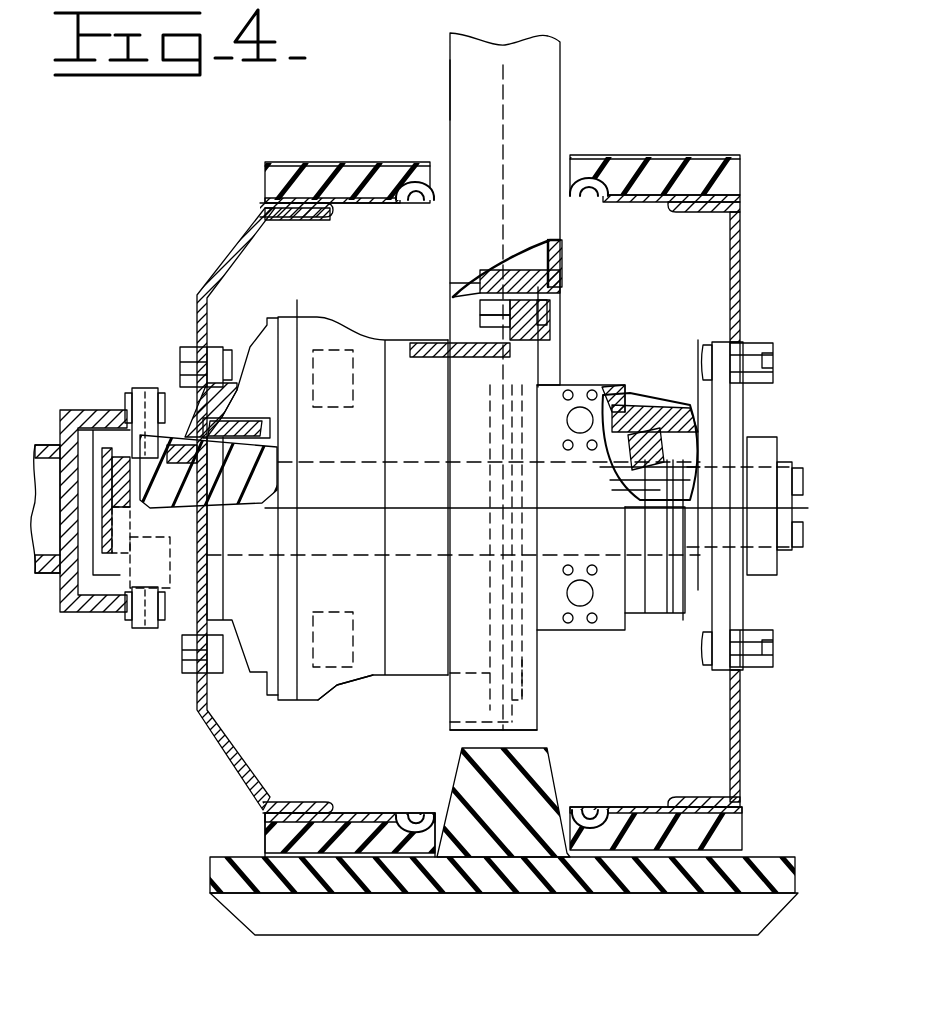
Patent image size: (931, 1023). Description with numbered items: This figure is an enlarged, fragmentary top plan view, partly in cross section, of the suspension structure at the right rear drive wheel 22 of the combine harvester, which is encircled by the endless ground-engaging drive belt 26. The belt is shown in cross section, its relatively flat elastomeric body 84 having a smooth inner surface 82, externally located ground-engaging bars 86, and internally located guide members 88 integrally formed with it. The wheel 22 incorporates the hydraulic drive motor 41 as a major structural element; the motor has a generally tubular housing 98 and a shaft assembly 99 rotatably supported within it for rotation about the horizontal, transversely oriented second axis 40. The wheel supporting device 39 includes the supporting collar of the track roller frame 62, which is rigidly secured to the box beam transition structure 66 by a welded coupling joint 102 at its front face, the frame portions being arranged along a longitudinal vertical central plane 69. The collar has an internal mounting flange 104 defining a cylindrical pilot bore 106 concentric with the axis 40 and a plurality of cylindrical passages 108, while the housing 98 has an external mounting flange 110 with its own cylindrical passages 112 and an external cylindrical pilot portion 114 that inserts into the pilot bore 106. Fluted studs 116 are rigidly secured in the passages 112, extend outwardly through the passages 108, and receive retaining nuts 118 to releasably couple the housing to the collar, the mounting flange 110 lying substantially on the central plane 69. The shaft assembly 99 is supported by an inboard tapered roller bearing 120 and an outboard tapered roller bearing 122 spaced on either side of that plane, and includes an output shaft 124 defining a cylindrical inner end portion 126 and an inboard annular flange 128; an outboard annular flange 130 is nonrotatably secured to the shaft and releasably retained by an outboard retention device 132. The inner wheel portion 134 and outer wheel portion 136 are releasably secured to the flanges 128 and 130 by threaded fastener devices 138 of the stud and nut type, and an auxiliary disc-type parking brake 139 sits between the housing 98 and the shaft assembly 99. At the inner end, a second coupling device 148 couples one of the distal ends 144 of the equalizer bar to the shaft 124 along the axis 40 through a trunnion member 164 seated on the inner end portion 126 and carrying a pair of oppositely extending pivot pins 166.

The rear drive wheel 22 is at (231, 770).
The drive belt 26 is at (212, 896).
The wheel supporting device 39 is at (568, 241).
The second axis 40 is at (467, 508).
The hydraulic drive motor 41 is at (384, 676).
The track roller frame 62 is at (456, 78).
The transition structure 66 is at (562, 92).
The central plane 69 is at (503, 92).
The inner surface 82 is at (245, 857).
The elastomeric body 84 is at (222, 875).
The ground-engaging bars 86 is at (257, 913).
The guide members 88 is at (547, 777).
The housing 98 is at (323, 330).
The shaft assembly 99 is at (470, 462).
The welded coupling joint 102 is at (450, 280).
The internal mounting flange 104 is at (525, 717).
The pilot bore 106 is at (537, 348).
The cylindrical passages 108 is at (533, 310).
The external mounting flange 110 is at (490, 687).
The cylindrical passages 112 is at (490, 322).
The external cylindrical pilot portion 114 is at (530, 685).
The fluted studs 116 is at (483, 308).
The retaining nuts 118 is at (537, 323).
The inboard tapered roller bearing 120 is at (274, 431).
The outboard tapered roller bearing 122 is at (633, 387).
The output shaft 124 is at (258, 481).
The cylindrical inner end portion 126 is at (128, 505).
The inboard annular flange 128 is at (213, 343).
The outboard annular flange 130 is at (723, 347).
The outboard retention device 132 is at (787, 452).
The inner wheel portion 134 is at (243, 770).
The outer wheel portion 136 is at (733, 738).
The threaded fastener devices 138 is at (187, 672).
The parking brake 139 is at (357, 635).
The distal ends 144 is at (78, 410).
The second coupling device 148 is at (112, 402).
The trunnion member 164 is at (80, 438).
The pivot pins 166 is at (143, 392).